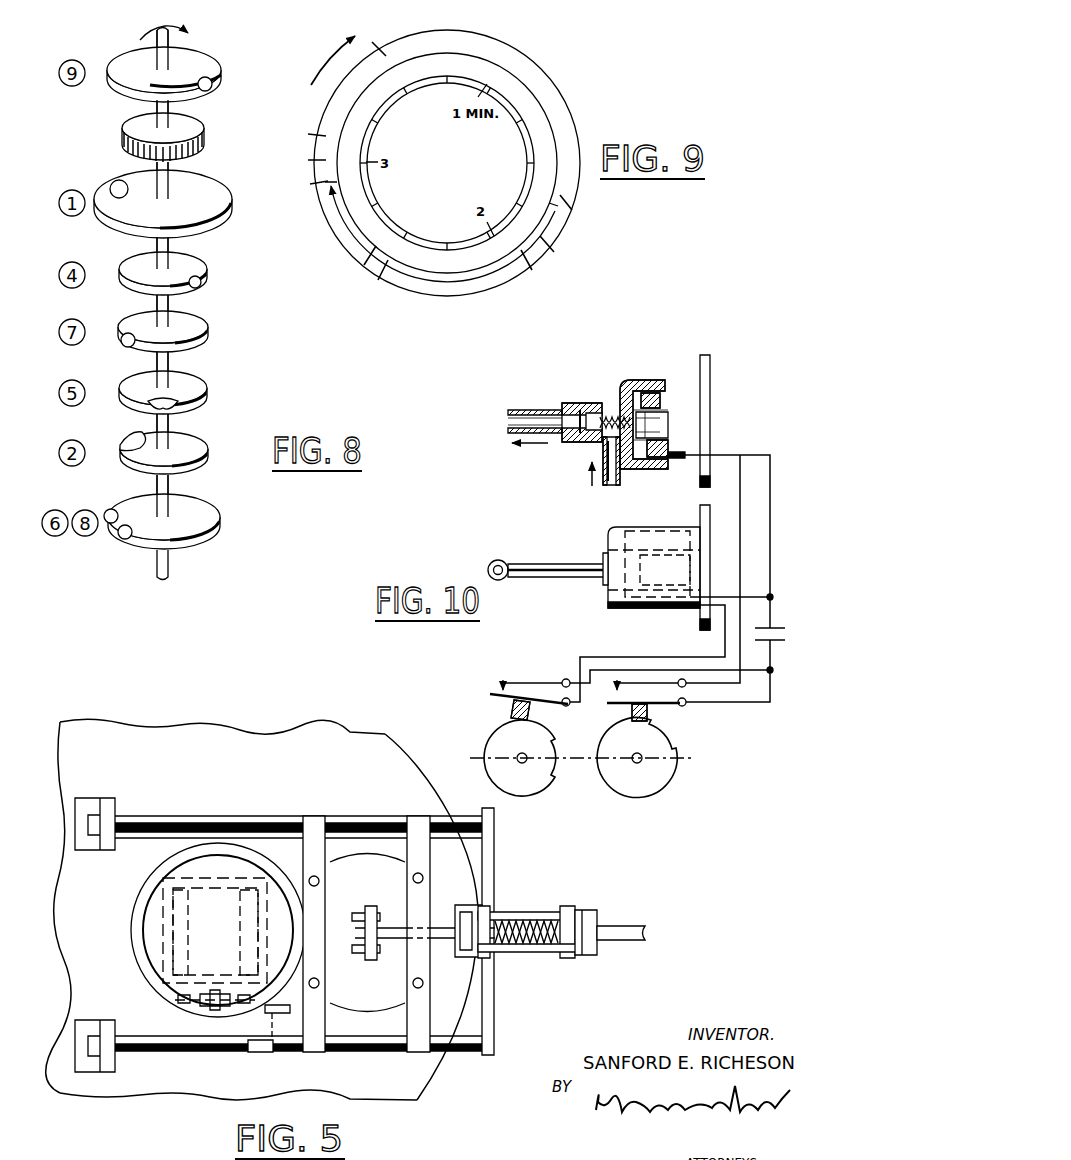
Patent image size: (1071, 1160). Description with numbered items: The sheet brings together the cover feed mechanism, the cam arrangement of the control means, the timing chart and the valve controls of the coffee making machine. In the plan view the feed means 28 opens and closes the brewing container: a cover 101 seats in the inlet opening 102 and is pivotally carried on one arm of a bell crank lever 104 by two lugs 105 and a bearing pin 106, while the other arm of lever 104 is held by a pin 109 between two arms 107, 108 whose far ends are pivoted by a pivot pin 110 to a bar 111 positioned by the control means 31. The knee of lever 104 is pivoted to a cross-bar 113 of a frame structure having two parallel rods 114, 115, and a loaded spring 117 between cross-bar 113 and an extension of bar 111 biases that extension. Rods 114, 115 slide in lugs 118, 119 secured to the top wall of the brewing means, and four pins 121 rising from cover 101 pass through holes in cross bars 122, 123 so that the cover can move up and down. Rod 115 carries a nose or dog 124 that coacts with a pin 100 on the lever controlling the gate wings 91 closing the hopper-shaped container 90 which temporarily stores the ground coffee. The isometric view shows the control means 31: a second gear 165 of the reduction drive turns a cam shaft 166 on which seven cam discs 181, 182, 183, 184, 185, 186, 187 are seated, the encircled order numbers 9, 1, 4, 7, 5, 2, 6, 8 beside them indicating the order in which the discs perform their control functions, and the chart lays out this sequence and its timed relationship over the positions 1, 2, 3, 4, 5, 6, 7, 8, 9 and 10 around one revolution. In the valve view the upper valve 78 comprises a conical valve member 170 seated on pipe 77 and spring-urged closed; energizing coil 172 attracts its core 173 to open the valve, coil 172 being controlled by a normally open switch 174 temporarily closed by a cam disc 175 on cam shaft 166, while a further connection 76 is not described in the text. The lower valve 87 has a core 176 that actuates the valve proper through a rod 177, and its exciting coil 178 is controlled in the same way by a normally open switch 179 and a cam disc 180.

In FIG. 8, the cam disc 181 is at (192, 60).
In FIG. 8, the second gear 165 is at (193, 127).
In FIG. 8, the cam disc 182 is at (205, 190).
In FIG. 8, the cam disc 183 is at (191, 265).
In FIG. 8, the cam shaft 166 is at (174, 305).
In FIG. 8, the cam disc 184 is at (193, 330).
In FIG. 8, the cam disc 185 is at (195, 390).
In FIG. 8, the cam disc 186 is at (198, 452).
In FIG. 8, the cam disc 187 is at (212, 518).
In FIG. 8, the control means 31 is at (232, 352).
In FIG. 10, the control means 31 is at (490, 527).
In FIG. 9, the dial mark 1 is at (316, 150).
In FIG. 9, the dial mark 2 is at (327, 100).
In FIG. 9, the dial ring 3 is at (540, 62).
In FIG. 9, the dial mark 4 is at (550, 248).
In FIG. 9, the dial scale 5 is at (460, 296).
In FIG. 9, the dial mark 6 is at (372, 276).
In FIG. 9, the dial mark 7 is at (341, 236).
In FIG. 9, the dial mark 8 is at (316, 180).
In FIG. 9, the dial mark 9 is at (563, 228).
In FIG. 9, the dial 10 is at (440, 273).
In FIG. 10, the valve 78 is at (654, 370).
In FIG. 10, the coil 172 is at (660, 398).
In FIG. 10, the conical valve member 170 is at (598, 402).
In FIG. 10, the pipe 77 is at (536, 412).
In FIG. 10, the core 173 is at (662, 425).
In FIG. 10, the rod 177 is at (590, 446).
In FIG. 10, the outlet stem 76 is at (622, 472).
In FIG. 10, the solenoid coil 178 is at (650, 540).
In FIG. 10, the core 176 is at (603, 555).
In FIG. 10, the valve 87 is at (606, 600).
In FIG. 10, the switch 179 is at (528, 680).
In FIG. 10, the cam disc 180 is at (497, 745).
In FIG. 10, the switch 174 is at (652, 692).
In FIG. 10, the cam disc 175 is at (667, 774).
In FIG. 5, the lug 118 is at (110, 812).
In FIG. 5, the parallel rod 114 is at (217, 822).
In FIG. 5, the cross bar 122 is at (314, 840).
In FIG. 5, the cover 101 is at (362, 862).
In FIG. 5, the pin 121 is at (311, 876).
In FIG. 5, the cross-bar 113 is at (490, 866).
In FIG. 5, the feed means 28 is at (522, 873).
In FIG. 5, the hopper-shaped container 90 is at (168, 905).
In FIG. 5, the gate wing 91 is at (243, 908).
In FIG. 5, the inlet opening 102 is at (140, 922).
In FIG. 5, the bell crank lever 104 is at (392, 928).
In FIG. 5, the pin 109 is at (470, 908).
In FIG. 5, the arm 107 is at (520, 917).
In FIG. 5, the bar 111 is at (620, 926).
In FIG. 5, the lug 105 is at (358, 953).
In FIG. 5, the bearing pin 106 is at (372, 960).
In FIG. 5, the arm 108 is at (530, 952).
In FIG. 5, the pivot pin 110 is at (565, 953).
In FIG. 5, the loaded spring 117 is at (512, 952).
In FIG. 5, the lug 119 is at (108, 1022).
In FIG. 5, the parallel rod 115 is at (197, 1043).
In FIG. 5, the nose or dog 124 is at (258, 1052).
In FIG. 5, the pin 100 is at (297, 927).
In FIG. 5, the cross bar 123 is at (418, 1020).